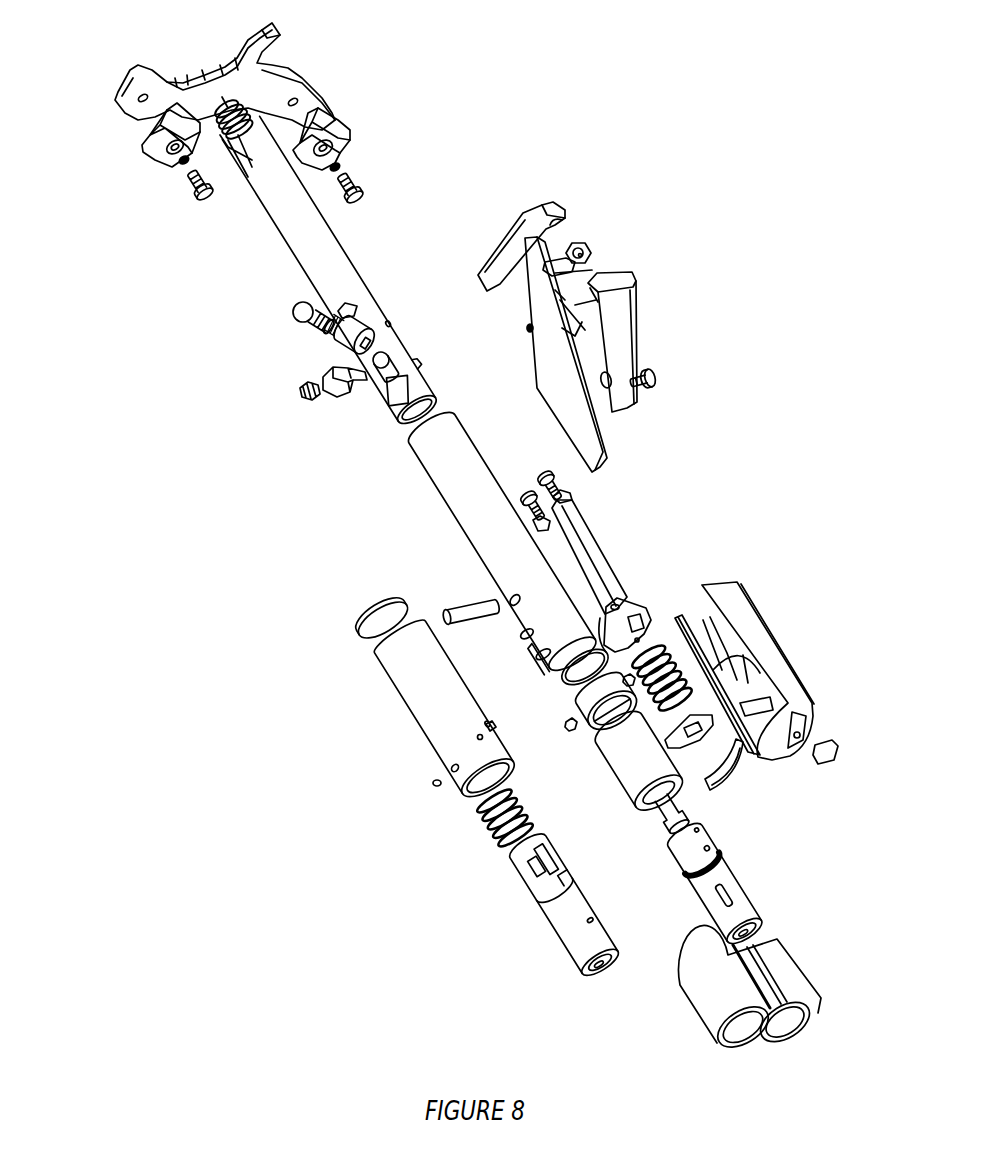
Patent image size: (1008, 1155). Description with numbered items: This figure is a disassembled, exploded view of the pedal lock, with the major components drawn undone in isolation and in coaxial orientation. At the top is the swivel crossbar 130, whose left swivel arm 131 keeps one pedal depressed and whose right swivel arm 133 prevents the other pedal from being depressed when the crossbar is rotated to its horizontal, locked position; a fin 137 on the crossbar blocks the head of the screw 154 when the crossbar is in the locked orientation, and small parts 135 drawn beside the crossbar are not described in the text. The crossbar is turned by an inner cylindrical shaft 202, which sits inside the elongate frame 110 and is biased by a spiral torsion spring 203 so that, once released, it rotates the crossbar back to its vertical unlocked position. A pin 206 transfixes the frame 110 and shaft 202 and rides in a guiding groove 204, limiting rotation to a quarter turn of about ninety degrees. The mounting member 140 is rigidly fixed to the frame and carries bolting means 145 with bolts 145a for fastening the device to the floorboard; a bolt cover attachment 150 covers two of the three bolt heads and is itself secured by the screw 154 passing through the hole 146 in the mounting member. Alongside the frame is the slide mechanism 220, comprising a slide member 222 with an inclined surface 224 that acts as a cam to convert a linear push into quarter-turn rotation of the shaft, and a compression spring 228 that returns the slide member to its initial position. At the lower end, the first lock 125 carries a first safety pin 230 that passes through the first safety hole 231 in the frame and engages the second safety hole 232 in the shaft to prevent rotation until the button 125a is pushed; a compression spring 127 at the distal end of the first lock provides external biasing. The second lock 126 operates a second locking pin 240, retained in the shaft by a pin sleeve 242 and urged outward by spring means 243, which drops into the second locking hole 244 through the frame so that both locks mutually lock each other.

The elongate frame 110 is at (453, 478).
The first lock 125 is at (557, 927).
The button 125a is at (580, 972).
The second lock 126 is at (748, 888).
The compression spring 127 is at (490, 823).
The swivel crossbar 130 is at (308, 74).
The left swivel arm 131 is at (134, 65).
The right swivel arm 133 is at (337, 113).
The clip 135 is at (350, 147).
The fin 137 is at (281, 30).
The mounting member 140 is at (548, 372).
The means for bolting 145 is at (593, 268).
The bolts 145a is at (585, 251).
The hole 146 is at (526, 327).
The bolt cover attachment 150 is at (617, 333).
The screw 154 is at (659, 374).
The inner cylindrical shaft 202 is at (322, 247).
The spiral torsion spring 203 is at (240, 112).
The guiding groove 204 is at (340, 311).
The pin 206 is at (447, 611).
The slide mechanism 220 is at (762, 673).
The slide member 222 is at (760, 626).
The inclined surface 224 is at (730, 670).
The compression spring 228 is at (660, 653).
The first safety pin 230 is at (330, 397).
The first safety hole 231 is at (558, 675).
The second safety hole 232 is at (392, 418).
The second locking pin 240 is at (294, 309).
The pin sleeve 242 is at (340, 343).
The spring means 243 is at (336, 327).
The second locking hole 244 is at (528, 635).